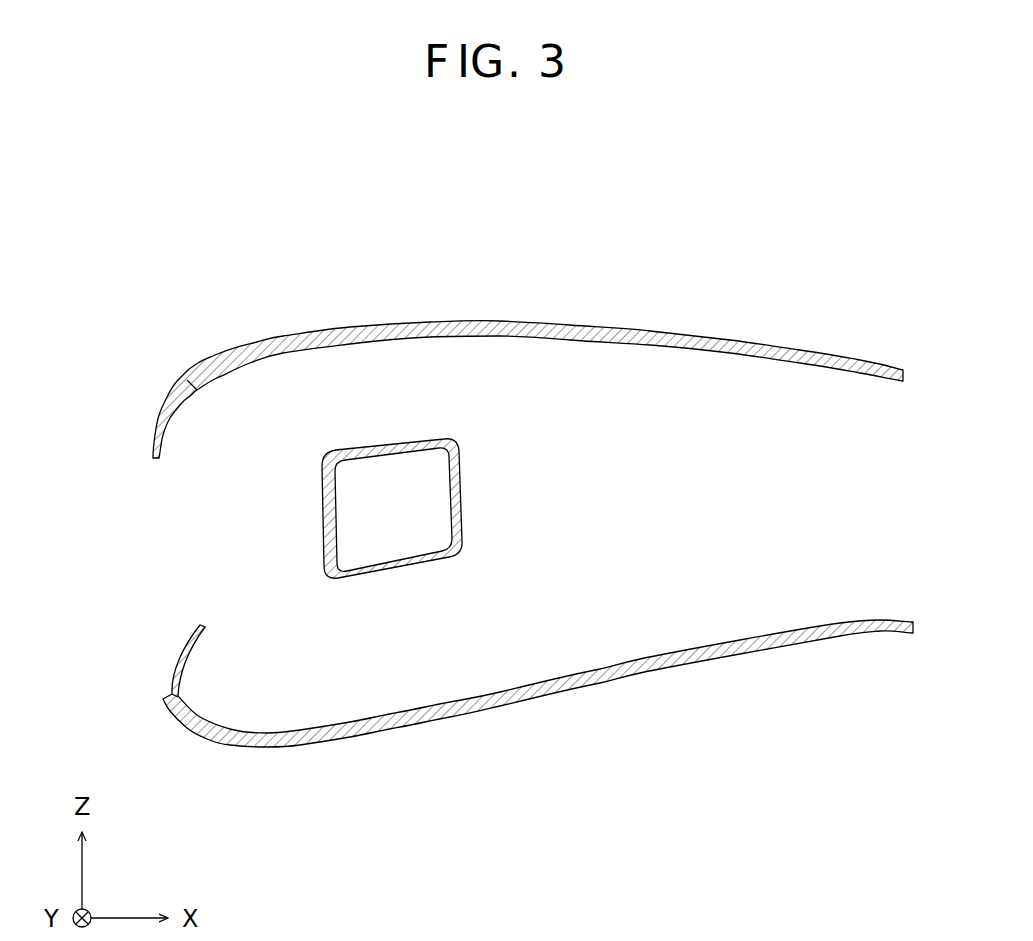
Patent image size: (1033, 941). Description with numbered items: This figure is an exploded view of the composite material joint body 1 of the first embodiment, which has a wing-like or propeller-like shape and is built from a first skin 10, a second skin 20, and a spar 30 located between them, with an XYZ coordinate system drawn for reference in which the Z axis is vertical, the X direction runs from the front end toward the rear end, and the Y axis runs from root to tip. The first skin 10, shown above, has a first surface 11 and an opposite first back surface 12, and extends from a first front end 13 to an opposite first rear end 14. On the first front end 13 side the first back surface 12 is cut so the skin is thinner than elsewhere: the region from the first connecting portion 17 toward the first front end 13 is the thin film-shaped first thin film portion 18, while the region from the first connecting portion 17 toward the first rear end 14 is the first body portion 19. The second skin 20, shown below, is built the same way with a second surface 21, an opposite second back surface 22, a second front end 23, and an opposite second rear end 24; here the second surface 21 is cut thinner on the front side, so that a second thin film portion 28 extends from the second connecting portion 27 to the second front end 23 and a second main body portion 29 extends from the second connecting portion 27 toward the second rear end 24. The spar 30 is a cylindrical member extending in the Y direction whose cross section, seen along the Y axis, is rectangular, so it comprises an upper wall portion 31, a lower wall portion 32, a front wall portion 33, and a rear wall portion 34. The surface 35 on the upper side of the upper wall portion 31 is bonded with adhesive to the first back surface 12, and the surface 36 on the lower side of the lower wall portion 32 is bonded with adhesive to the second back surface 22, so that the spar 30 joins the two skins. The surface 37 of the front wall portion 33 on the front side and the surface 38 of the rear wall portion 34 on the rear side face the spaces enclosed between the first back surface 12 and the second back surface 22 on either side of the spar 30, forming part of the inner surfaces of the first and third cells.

The composite material joint body 1 is at (167, 221).
The first skin 10 is at (669, 254).
The first surface 11 is at (571, 325).
The first back surface 12 is at (572, 340).
The first front end 13 is at (155, 461).
The first rear end 14 is at (903, 369).
The first connecting portion 17 is at (193, 390).
The first thin film portion 18 is at (160, 412).
The first body portion 19 is at (492, 322).
The second skin 20 is at (501, 737).
The second surface 21 is at (586, 688).
The second back surface 22 is at (608, 662).
The second front end 23 is at (205, 628).
The second rear end 24 is at (912, 634).
The second connecting portion 27 is at (180, 694).
The second thin film portion 28 is at (180, 650).
The second main body portion 29 is at (549, 695).
The spar 30 is at (471, 420).
The upper wall portion 31 is at (362, 441).
The lower wall portion 32 is at (360, 579).
The front wall portion 33 is at (322, 497).
The rear wall portion 34 is at (465, 495).
The surface on the +Z axial direction side of the upper wall portion 35 is at (393, 440).
The −Z axial surface of the lower wall portion 36 is at (412, 565).
The surface of the front wall portion on −X axial side 37 is at (323, 538).
The surface on the +X axial direction side of the rear wall portion 38 is at (465, 508).